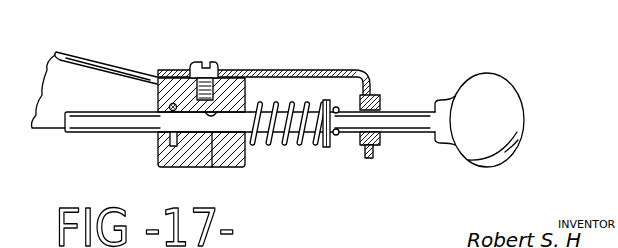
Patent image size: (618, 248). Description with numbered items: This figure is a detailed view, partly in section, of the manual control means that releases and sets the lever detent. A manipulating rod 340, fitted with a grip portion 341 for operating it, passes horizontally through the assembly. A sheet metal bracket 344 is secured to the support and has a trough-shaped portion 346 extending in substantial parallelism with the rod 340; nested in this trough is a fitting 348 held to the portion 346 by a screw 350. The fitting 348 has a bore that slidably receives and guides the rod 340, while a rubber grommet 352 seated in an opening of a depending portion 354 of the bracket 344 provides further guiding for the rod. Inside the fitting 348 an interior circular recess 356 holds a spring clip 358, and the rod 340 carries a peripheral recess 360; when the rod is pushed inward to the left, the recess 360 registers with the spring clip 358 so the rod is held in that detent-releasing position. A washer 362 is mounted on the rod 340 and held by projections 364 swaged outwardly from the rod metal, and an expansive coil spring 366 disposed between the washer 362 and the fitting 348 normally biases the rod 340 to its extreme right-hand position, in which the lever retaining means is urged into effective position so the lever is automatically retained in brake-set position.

The manipulating rod 340 is at (397, 127).
The grip portion 341 is at (498, 83).
The sheet metal bracket 344 is at (128, 47).
The bracket portion 346 is at (277, 72).
The fitting 348 is at (178, 163).
The screw 350 is at (217, 72).
The rubber grommet 352 is at (385, 110).
The depending portion 354 is at (377, 95).
The interior circular recess 356 is at (160, 140).
The spring clip 358 is at (163, 110).
The peripheral recess 360 is at (210, 168).
The washer 362 is at (324, 148).
The projections 364 is at (339, 107).
The expansive coil spring 366 is at (259, 143).